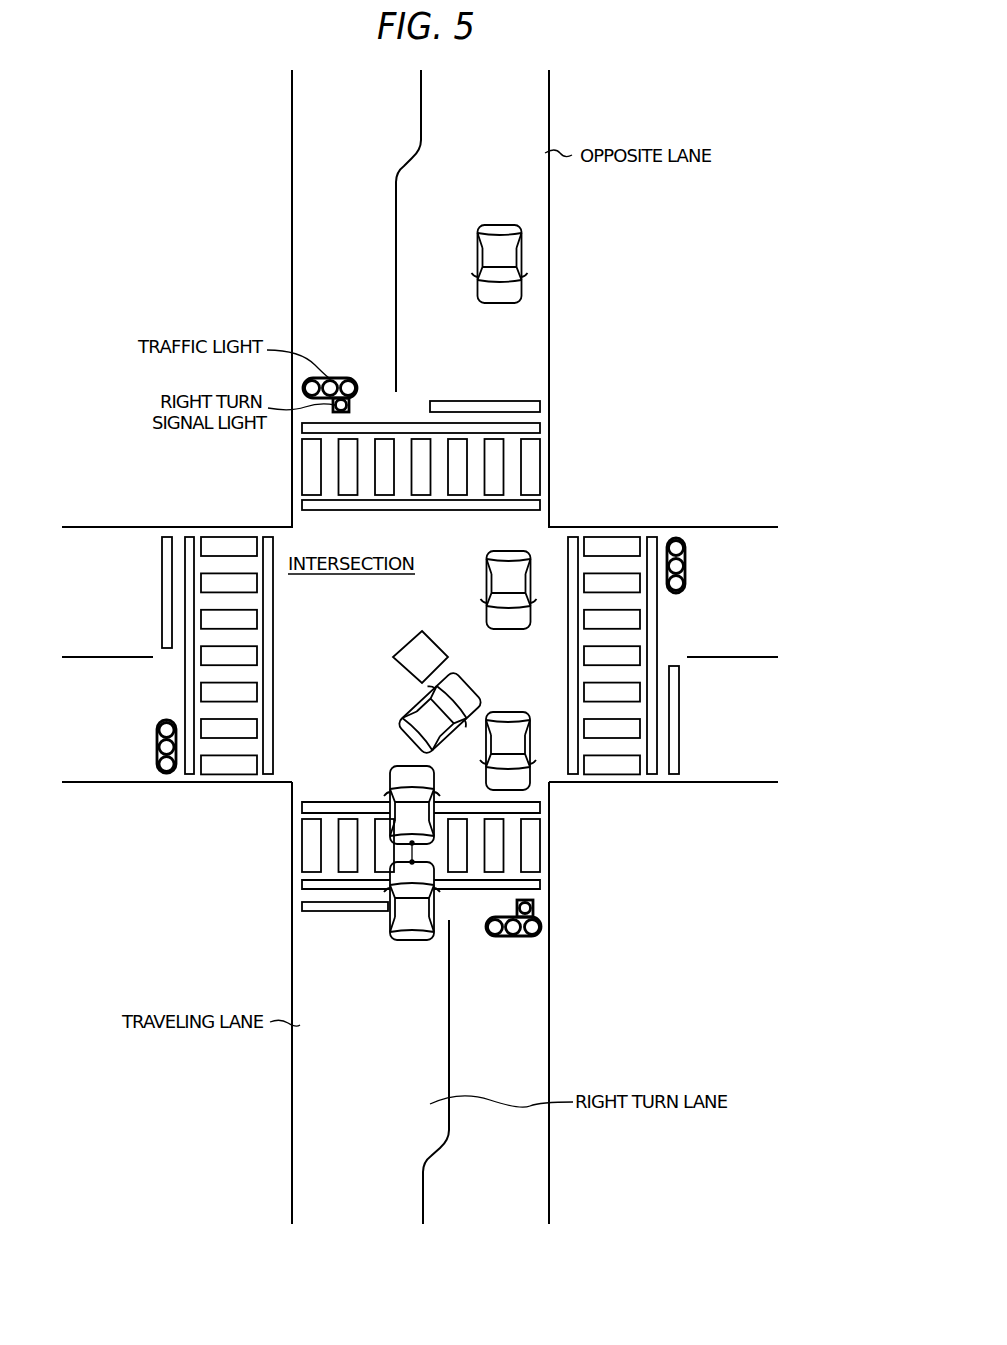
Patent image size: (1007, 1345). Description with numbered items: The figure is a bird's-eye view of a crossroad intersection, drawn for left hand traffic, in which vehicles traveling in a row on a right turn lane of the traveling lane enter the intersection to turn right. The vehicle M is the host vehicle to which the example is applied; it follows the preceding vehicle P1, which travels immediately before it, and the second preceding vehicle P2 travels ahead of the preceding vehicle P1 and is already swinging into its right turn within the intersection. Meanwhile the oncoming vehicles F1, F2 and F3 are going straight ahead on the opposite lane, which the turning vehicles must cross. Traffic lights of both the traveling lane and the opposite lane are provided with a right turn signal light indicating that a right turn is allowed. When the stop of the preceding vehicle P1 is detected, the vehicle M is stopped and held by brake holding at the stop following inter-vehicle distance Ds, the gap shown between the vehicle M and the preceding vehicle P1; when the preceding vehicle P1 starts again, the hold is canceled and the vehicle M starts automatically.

The oncoming vehicle F3 is at (499, 225).
The oncoming vehicle F2 is at (487, 572).
The oncoming vehicle F1 is at (528, 728).
The second preceding vehicle P2 is at (415, 706).
The preceding vehicle P1 is at (392, 775).
The vehicle M is at (412, 940).
The stop following inter-vehicle distance Ds is at (413, 851).